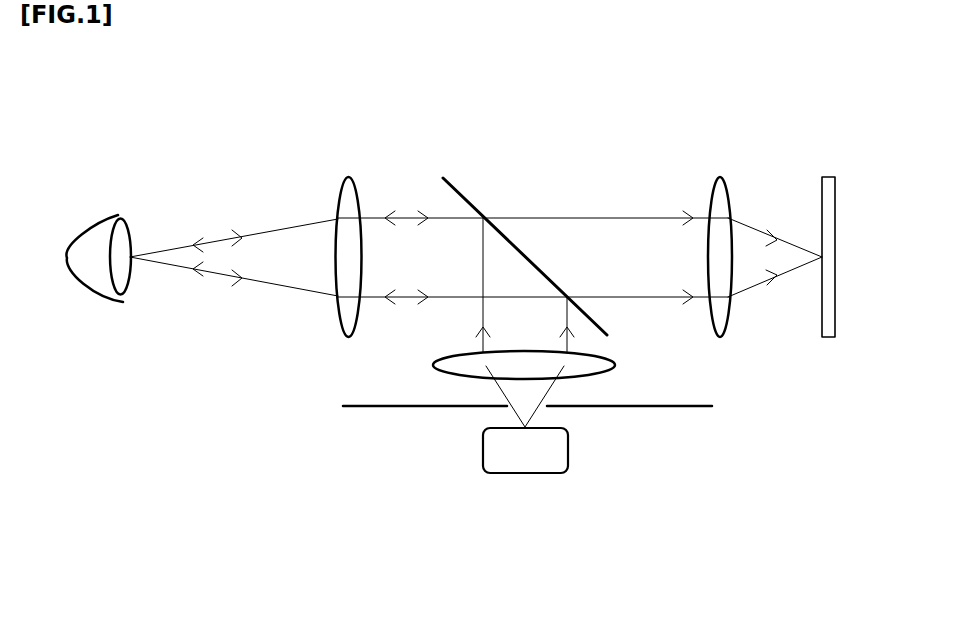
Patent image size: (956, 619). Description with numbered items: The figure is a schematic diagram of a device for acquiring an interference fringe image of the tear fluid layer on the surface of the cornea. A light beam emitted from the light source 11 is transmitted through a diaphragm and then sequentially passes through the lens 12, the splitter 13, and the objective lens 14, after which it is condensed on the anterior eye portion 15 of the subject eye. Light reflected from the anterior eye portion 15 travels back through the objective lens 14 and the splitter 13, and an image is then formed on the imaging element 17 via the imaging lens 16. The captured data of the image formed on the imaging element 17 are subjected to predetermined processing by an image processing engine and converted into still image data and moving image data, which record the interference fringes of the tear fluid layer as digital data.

The light source 11 is at (495, 473).
The lens 12 is at (433, 363).
The splitter 13 is at (463, 192).
The objective lens 14 is at (353, 178).
The anterior eye portion 15 is at (132, 235).
The imaging lens 16 is at (728, 190).
The imaging element 17 is at (827, 177).